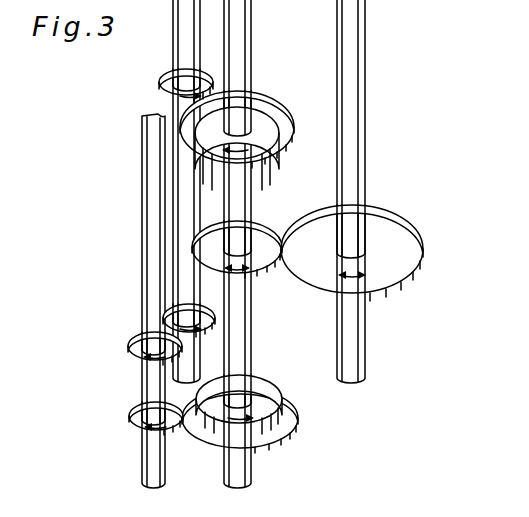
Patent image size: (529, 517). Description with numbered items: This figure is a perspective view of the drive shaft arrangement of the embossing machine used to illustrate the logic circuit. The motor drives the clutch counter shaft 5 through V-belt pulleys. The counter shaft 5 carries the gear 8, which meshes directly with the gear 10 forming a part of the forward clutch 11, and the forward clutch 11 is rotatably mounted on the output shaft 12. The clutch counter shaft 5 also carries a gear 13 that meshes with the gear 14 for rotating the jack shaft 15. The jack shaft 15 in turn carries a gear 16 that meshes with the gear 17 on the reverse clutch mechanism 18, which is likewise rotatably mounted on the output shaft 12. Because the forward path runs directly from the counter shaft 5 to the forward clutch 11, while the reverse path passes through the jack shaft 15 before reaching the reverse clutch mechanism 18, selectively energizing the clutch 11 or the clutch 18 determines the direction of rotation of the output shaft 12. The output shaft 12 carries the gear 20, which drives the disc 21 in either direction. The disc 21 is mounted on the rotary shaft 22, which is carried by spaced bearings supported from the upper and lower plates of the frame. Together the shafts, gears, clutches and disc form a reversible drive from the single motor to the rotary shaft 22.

The clutch counter shaft 5 is at (155, 237).
The gear 8 is at (133, 425).
The gear 10 is at (292, 425).
The forward clutch 11 is at (270, 397).
The output shaft 12 is at (240, 340).
The gear 13 is at (132, 350).
The gear 14 is at (212, 311).
The jack shaft 15 is at (182, 202).
The gear 16 is at (160, 88).
The gear 17 is at (277, 107).
The reverse clutch mechanism 18 is at (272, 175).
The gear 20 is at (267, 238).
The disc 21 is at (402, 228).
The rotary shaft 22 is at (350, 147).